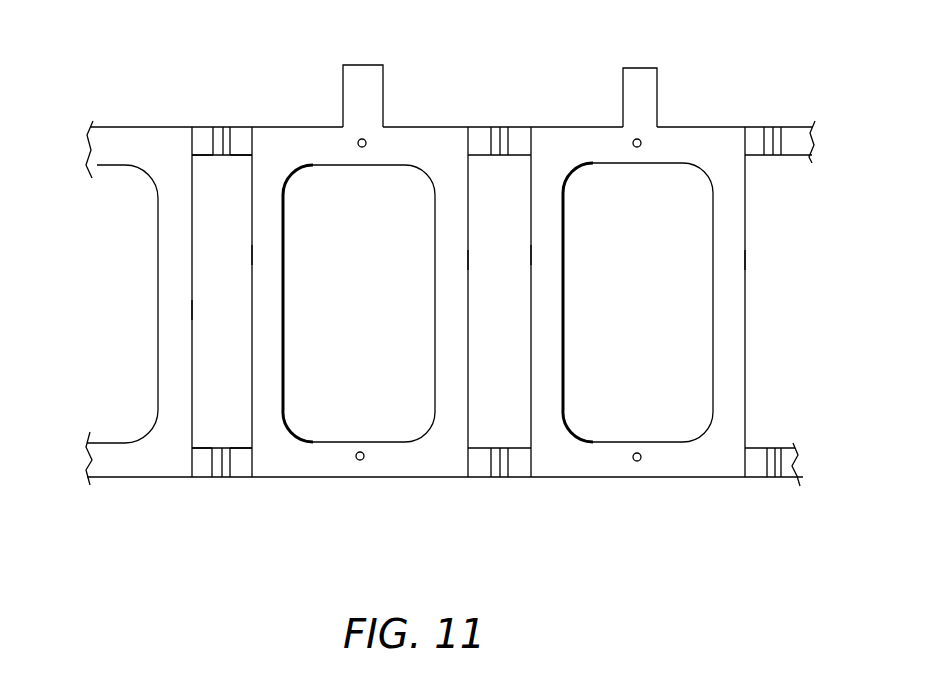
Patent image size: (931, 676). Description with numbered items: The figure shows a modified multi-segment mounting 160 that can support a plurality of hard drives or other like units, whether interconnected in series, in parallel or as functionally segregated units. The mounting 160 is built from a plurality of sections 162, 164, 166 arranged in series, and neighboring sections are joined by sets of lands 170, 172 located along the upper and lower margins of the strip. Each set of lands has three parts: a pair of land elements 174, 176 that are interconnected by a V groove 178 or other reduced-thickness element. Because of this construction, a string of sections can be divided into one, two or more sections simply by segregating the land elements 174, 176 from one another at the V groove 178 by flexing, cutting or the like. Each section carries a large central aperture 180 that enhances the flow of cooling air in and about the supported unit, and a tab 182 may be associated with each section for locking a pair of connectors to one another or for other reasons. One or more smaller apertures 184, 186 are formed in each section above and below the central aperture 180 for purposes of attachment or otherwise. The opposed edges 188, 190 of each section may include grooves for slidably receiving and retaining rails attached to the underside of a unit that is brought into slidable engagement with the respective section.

The mounting 160 is at (685, 617).
The section 162 is at (138, 465).
The section 164 is at (400, 468).
The section 166 is at (567, 465).
The set of lands 170 is at (200, 480).
The set of lands 172 is at (200, 125).
The land element 174 is at (205, 158).
The land element 176 is at (237, 158).
The V groove 178 is at (222, 127).
The central aperture 180 is at (158, 352).
The tab 182 is at (383, 75).
The aperture 184 is at (357, 461).
The aperture 186 is at (365, 140).
The edge 188 is at (194, 316).
The edge 190 is at (248, 249).